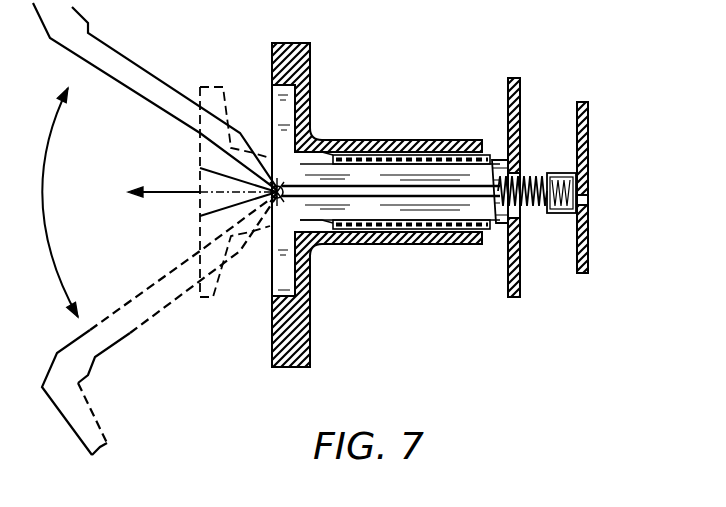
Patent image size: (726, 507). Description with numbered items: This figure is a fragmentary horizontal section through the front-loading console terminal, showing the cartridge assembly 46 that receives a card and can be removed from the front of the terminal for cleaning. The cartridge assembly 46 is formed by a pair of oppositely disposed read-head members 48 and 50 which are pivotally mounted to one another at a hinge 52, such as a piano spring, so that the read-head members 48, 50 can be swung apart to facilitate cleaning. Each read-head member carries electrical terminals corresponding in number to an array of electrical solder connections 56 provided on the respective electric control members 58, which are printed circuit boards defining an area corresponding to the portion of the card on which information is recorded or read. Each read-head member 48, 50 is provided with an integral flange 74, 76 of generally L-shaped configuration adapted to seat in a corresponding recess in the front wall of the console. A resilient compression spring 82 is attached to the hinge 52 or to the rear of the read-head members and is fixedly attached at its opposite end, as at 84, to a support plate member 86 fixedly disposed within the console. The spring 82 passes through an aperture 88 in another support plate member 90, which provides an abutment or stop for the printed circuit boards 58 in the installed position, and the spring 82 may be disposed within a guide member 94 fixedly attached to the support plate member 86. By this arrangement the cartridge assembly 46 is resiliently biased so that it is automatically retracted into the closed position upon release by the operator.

The cartridge assembly 46 is at (158, 72).
The read-head member 48 is at (104, 56).
The read-head member 50 is at (400, 205).
The pivotal hinge connection 52 is at (313, 129).
The electrical solder connections 56 is at (430, 163).
The electric control members 58 is at (461, 160).
The integral flange 74 is at (214, 93).
The integral flange 76 is at (214, 297).
The resilient compression spring 82 is at (523, 200).
The spring attachment point 84 is at (585, 201).
The support plate member 86 is at (590, 122).
The aperture 88 is at (520, 177).
The support plate member 90 is at (520, 92).
The guide member 94 is at (560, 215).